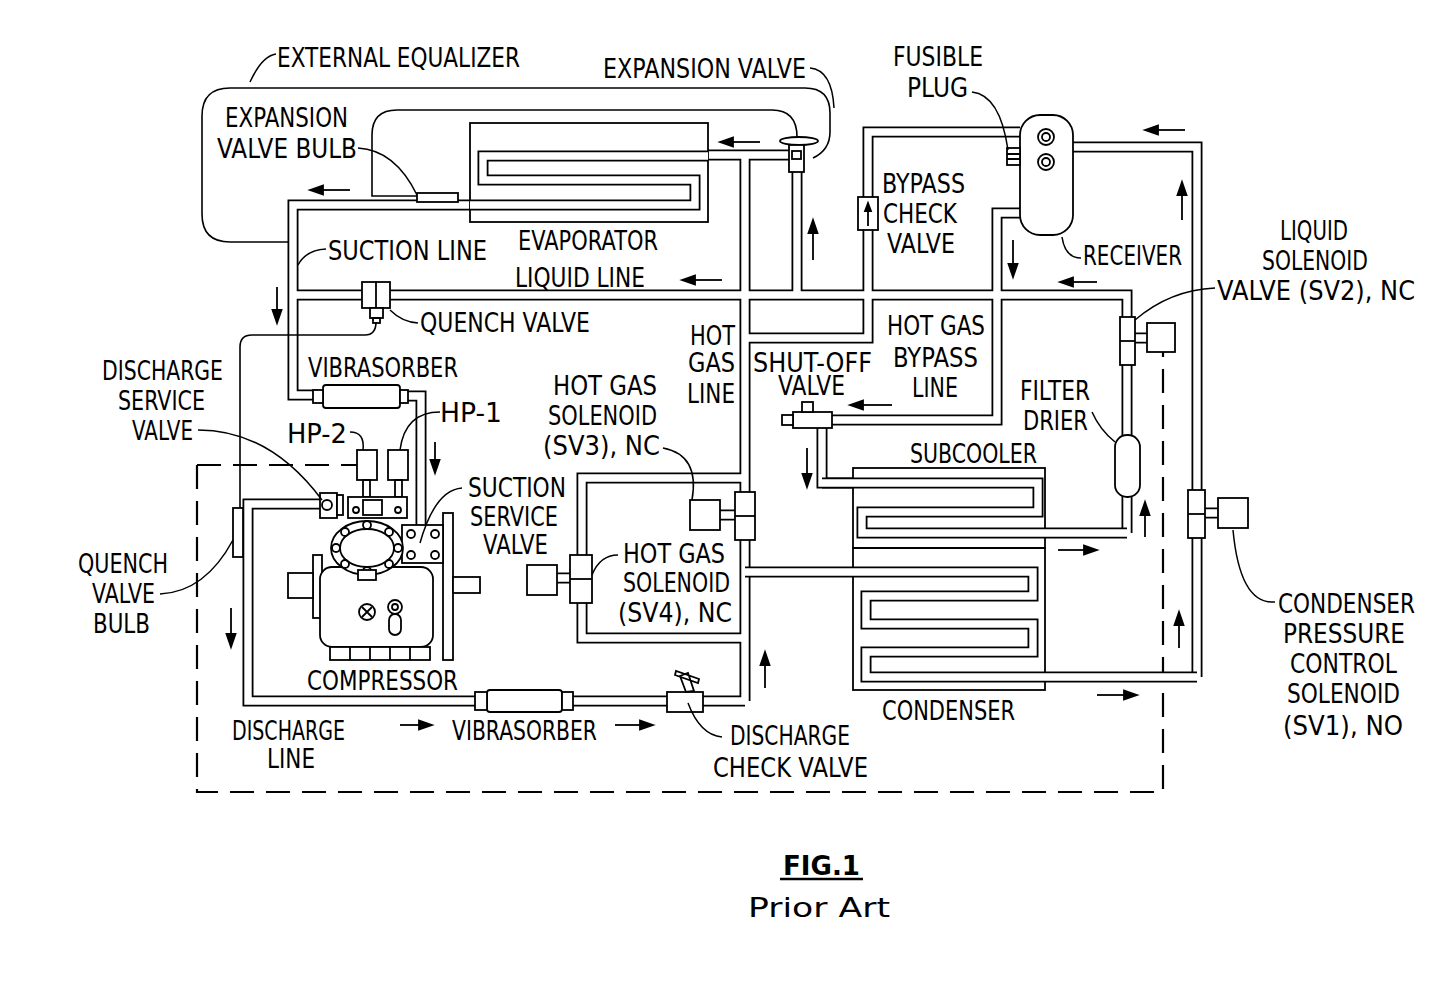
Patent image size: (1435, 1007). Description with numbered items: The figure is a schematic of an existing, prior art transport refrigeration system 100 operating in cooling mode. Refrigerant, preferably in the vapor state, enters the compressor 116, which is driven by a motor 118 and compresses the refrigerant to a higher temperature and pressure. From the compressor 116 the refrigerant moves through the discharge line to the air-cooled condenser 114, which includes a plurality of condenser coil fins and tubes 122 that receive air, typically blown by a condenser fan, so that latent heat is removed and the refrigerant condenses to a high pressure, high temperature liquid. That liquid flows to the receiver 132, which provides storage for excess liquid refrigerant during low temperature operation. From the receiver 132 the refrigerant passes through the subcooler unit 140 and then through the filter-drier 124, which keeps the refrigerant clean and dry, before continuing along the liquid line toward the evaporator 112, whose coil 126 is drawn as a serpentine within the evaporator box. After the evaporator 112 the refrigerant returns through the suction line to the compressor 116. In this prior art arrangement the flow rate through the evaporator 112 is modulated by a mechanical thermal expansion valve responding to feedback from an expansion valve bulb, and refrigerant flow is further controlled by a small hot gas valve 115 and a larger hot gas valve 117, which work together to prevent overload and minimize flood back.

The refrigeration system 100 is at (1050, 77).
The evaporator 112 is at (468, 160).
The evaporator coil 126 is at (536, 157).
The receiver 132 is at (1073, 193).
The subcooler unit 140 is at (893, 468).
The filter-drier 124 is at (1115, 478).
The air-cooled condenser 114 is at (1047, 602).
The condenser coil fins and tubes 122 is at (1035, 632).
The larger hot gas valve (SV3) 117 is at (690, 518).
The small hot gas valve (SV4) 115 is at (538, 597).
The compressor 116 is at (440, 590).
The motor 118 is at (432, 638).